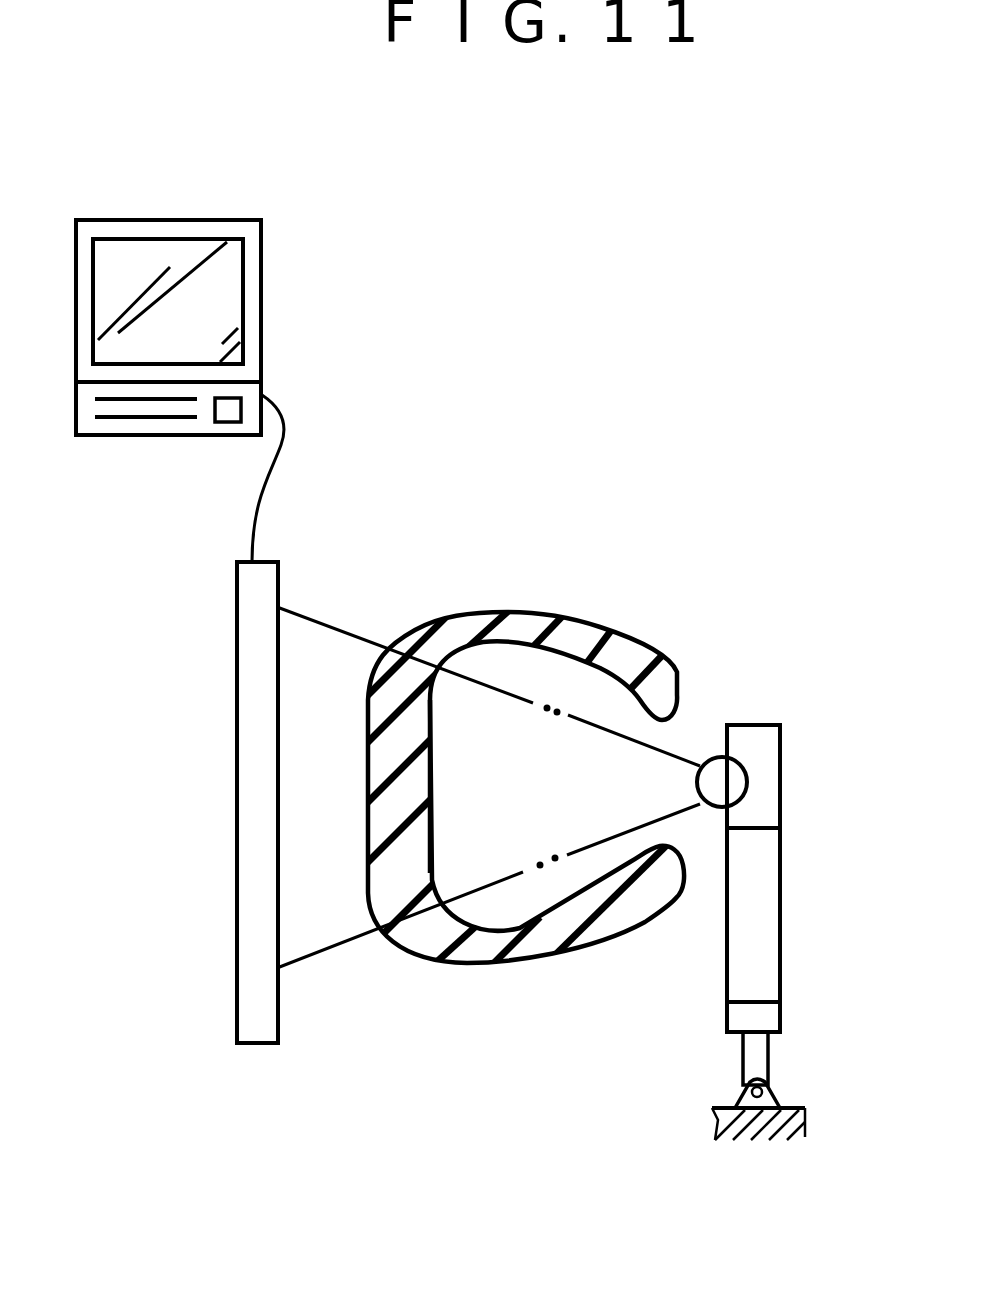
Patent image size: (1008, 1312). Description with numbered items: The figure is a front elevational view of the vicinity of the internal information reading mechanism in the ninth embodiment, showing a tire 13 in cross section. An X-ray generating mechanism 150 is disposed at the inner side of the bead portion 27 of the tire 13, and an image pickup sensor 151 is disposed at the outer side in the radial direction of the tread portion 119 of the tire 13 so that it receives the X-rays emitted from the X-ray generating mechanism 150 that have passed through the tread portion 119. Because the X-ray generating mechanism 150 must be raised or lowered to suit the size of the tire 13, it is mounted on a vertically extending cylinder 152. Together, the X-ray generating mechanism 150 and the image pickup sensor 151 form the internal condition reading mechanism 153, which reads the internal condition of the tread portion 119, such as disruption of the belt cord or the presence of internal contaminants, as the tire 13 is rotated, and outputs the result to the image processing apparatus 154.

The tire 13 is at (543, 612).
The bead portion 27 is at (652, 893).
The tread portion 119 is at (418, 808).
The X-ray generating mechanism 150 is at (745, 780).
The image pickup sensor 151 is at (253, 594).
The cylinder 152 is at (770, 975).
The internal condition reading mechanism 153 is at (717, 688).
The image processing apparatus 154 is at (263, 268).